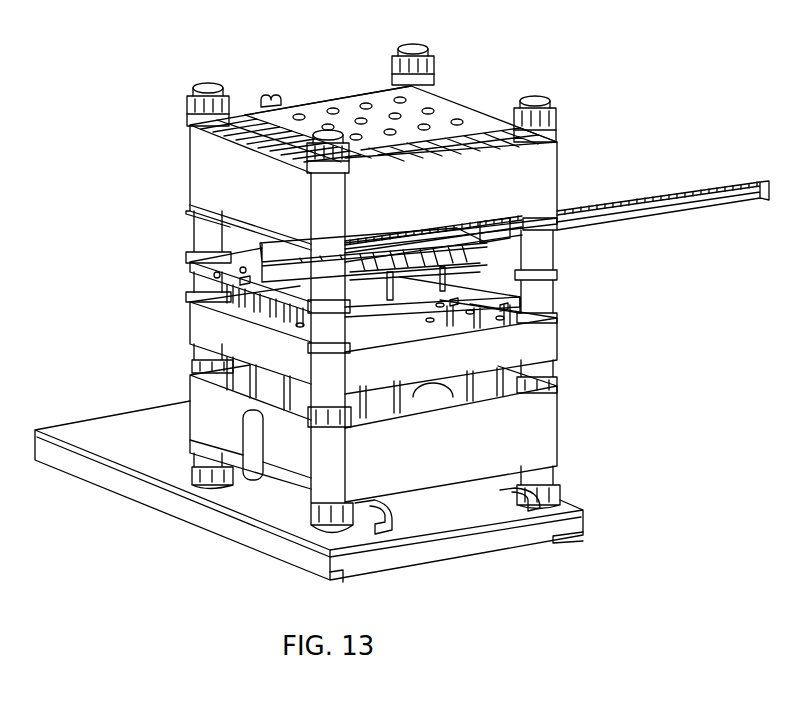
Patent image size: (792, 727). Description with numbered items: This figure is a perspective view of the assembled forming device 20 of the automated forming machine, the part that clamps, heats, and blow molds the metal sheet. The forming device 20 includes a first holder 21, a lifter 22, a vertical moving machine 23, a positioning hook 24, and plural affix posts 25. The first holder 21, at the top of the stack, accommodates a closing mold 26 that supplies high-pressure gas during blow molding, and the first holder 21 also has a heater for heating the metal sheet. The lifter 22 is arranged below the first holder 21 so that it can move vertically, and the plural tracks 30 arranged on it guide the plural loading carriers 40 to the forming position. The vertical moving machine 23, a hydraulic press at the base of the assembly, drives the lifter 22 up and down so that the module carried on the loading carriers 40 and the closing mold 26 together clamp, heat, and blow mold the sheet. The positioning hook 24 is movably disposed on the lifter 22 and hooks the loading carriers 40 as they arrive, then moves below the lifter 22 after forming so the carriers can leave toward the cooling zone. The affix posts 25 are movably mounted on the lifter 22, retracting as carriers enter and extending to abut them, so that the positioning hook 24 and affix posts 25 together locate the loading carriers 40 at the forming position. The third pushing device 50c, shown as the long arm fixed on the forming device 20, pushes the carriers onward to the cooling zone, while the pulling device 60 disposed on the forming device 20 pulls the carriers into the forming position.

The forming device 20 is at (627, 85).
The first holder 21 is at (208, 163).
The lifter 22 is at (240, 280).
The vertical moving machine 23 is at (220, 398).
The positioning hook 24 is at (222, 297).
The affix posts 25 is at (525, 270).
The closing mold 26 is at (447, 237).
The tracks 30 is at (223, 257).
The loading carriers 40 is at (424, 283).
The third pushing device 50c is at (645, 220).
The pulling device 60 is at (305, 237).